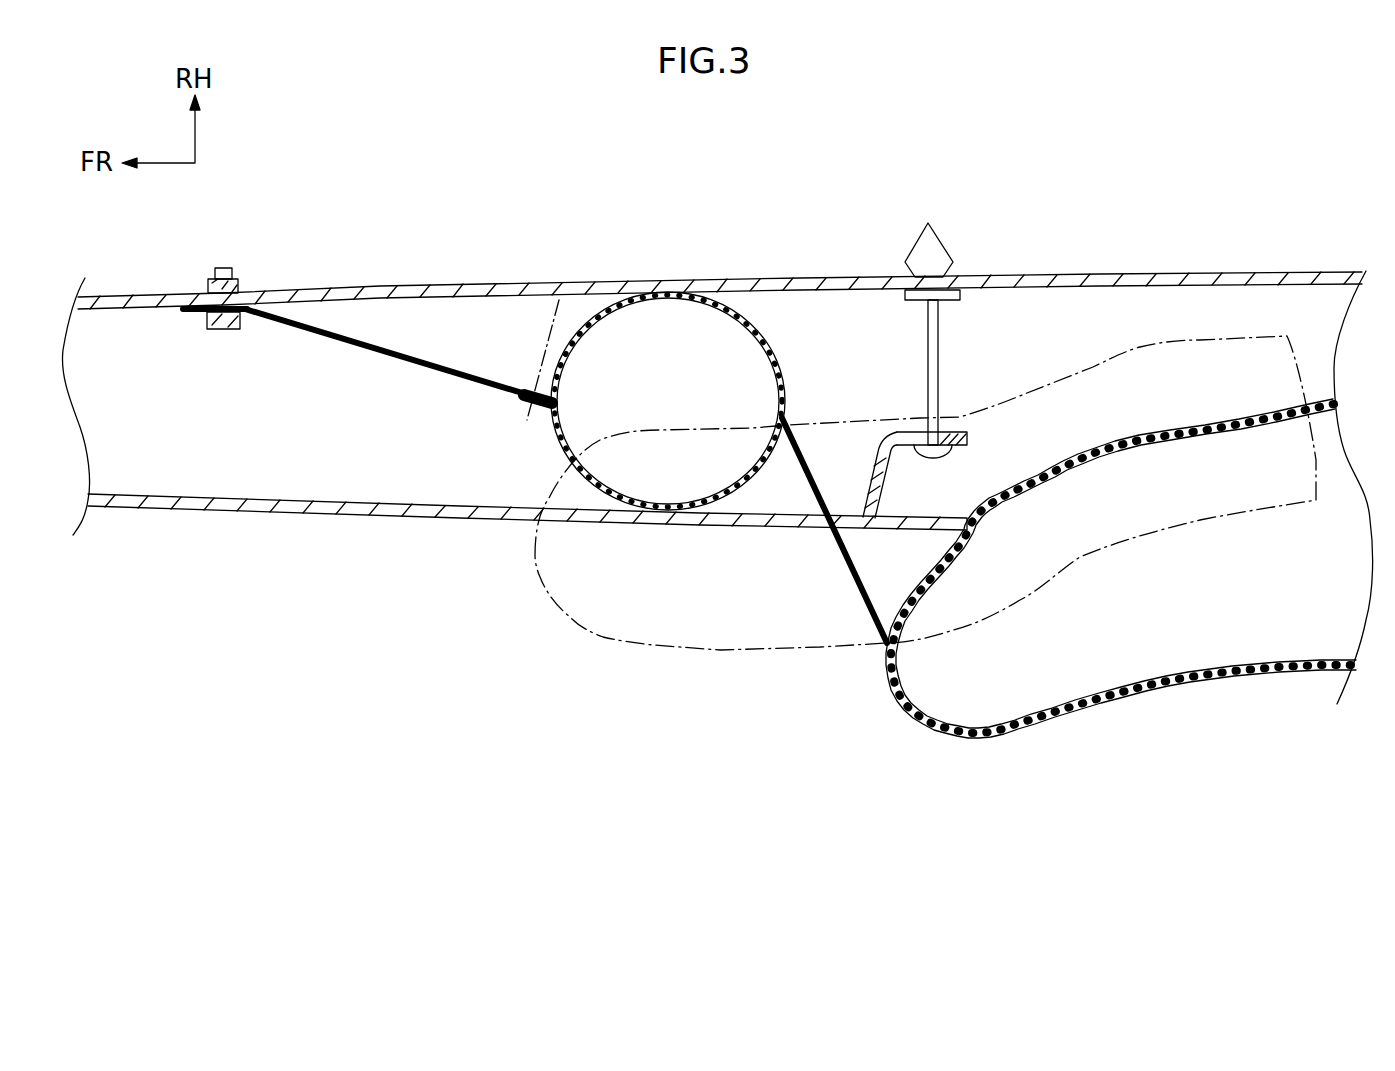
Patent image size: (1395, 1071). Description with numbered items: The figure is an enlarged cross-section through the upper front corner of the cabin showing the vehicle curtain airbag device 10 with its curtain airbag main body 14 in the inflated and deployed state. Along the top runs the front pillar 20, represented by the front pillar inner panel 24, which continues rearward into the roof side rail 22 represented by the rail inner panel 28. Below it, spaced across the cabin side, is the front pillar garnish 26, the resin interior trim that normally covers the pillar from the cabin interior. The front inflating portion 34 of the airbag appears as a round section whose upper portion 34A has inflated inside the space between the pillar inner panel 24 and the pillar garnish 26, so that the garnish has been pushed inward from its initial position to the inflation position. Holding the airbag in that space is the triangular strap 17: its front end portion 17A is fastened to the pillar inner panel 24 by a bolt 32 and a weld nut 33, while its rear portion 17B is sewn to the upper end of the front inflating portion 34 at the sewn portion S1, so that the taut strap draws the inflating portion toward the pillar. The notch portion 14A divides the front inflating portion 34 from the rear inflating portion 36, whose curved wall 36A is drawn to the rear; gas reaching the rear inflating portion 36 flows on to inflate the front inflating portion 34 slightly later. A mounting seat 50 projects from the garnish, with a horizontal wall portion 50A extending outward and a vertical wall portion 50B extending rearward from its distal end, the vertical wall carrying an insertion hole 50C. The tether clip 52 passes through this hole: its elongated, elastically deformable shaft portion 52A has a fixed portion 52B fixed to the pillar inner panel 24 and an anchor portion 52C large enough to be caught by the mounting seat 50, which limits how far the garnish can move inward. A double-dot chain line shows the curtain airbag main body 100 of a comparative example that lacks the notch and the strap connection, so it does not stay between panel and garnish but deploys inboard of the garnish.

The vehicle curtain airbag device 10 is at (788, 757).
The curtain airbag main body 14 is at (870, 692).
The notch portion 14A is at (838, 548).
The triangular strap 17 is at (450, 363).
The front end portion 17A is at (187, 310).
The rear portion 17B is at (535, 410).
The front pillar 20 is at (417, 267).
The roof side rail 22 is at (1183, 250).
The front pillar inner panel 24 is at (622, 282).
The front pillar garnish 26 is at (338, 518).
The rail inner panel 28 is at (1260, 277).
The bolt 32 is at (223, 330).
The weld nut 33 is at (207, 287).
The front inflating portion 34 is at (757, 325).
The upper portion 34A is at (696, 350).
The rear inflating portion 36 is at (1163, 685).
The duct bent portion 36A is at (1121, 583).
The mounting seat 50 is at (908, 428).
The horizontal wall portion 50A is at (868, 505).
The vertical wall portion 50B is at (952, 430).
The insertion hole 50C is at (932, 448).
The tether clip 52 is at (948, 245).
The shaft portion 52A is at (940, 360).
The fixed portion 52B is at (915, 245).
The anchor portion 52C is at (955, 460).
The curtain airbag main body of the comparative example 100 is at (660, 648).
The sewn portion S1 is at (560, 300).